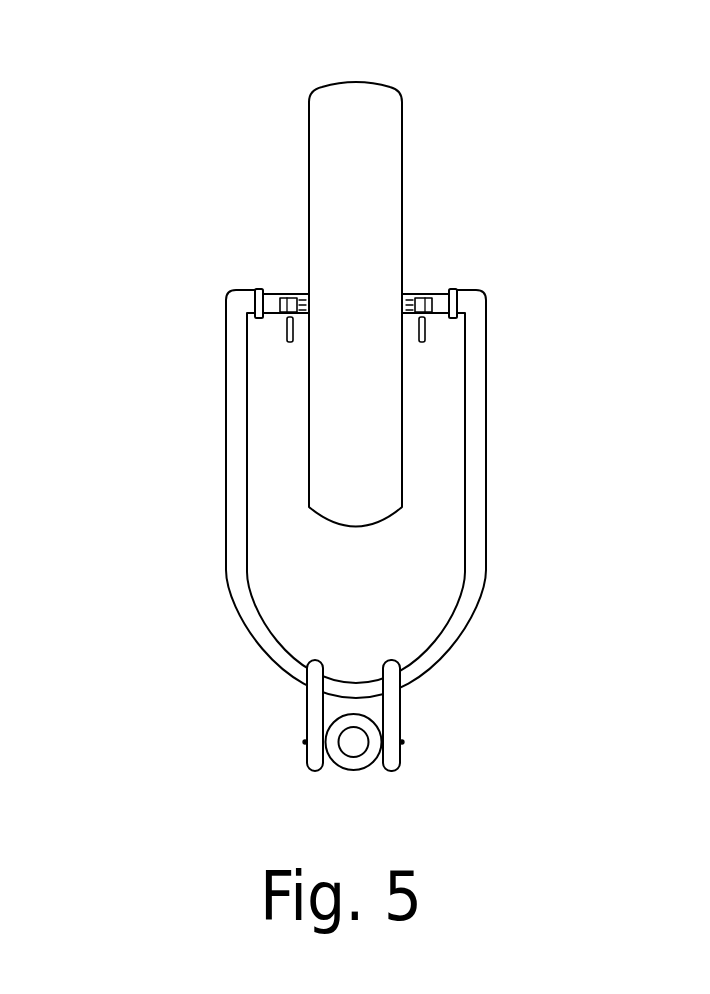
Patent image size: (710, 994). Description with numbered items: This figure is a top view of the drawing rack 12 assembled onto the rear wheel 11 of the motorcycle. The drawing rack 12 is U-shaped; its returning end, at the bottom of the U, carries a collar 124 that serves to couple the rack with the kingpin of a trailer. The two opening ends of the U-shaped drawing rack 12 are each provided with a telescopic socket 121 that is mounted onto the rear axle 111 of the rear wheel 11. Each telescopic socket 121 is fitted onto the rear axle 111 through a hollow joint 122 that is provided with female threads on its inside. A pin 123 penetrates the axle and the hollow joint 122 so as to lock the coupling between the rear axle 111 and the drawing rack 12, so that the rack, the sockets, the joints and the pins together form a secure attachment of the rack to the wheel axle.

The rear wheel 11 is at (332, 470).
The rear axle 111 is at (298, 292).
The drawing rack 12 is at (484, 570).
The telescopic socket 121 is at (450, 320).
The hollow joint 122 is at (408, 293).
The pin 123 is at (290, 333).
The collar 124 is at (375, 747).